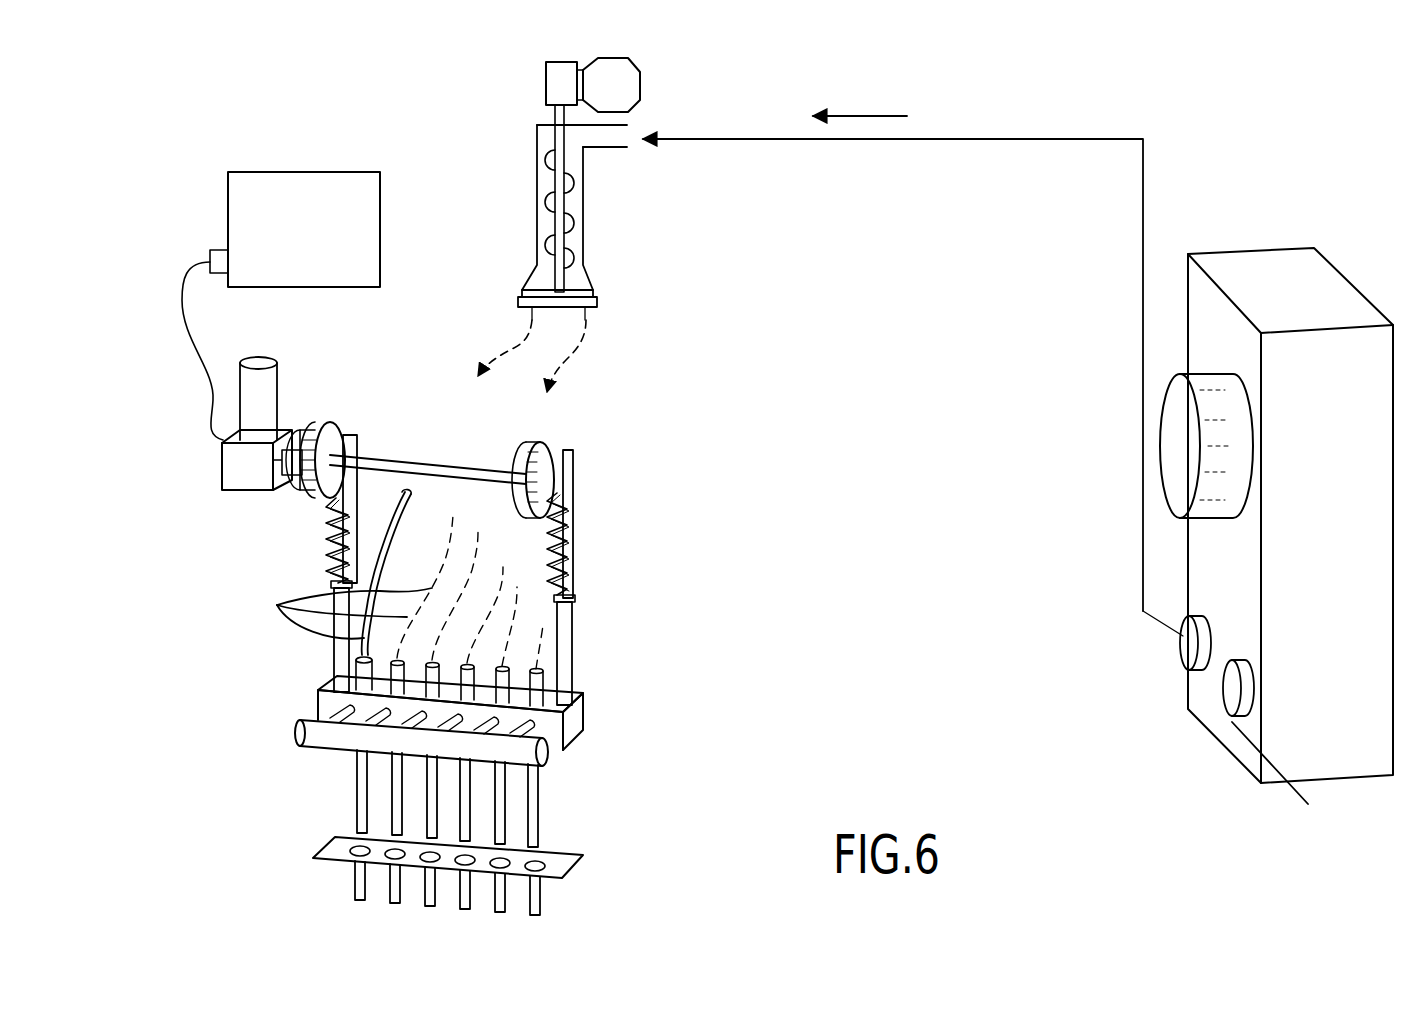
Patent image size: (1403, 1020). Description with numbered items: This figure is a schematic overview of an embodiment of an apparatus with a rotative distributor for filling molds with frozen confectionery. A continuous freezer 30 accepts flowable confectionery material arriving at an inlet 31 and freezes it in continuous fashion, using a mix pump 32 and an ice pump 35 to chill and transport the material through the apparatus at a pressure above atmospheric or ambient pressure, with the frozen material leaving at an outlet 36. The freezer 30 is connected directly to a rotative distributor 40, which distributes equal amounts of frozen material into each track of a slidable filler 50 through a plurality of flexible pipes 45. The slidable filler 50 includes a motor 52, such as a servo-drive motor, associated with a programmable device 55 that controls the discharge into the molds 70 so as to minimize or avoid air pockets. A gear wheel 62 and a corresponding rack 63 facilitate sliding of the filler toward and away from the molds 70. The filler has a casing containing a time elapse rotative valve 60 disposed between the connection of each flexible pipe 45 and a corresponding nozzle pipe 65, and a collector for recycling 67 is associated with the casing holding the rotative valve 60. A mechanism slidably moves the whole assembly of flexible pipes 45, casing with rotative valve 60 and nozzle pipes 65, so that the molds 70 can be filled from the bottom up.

The continuous freezer 30 is at (1307, 302).
The inlet 31 is at (1279, 808).
The mix pump 32 is at (1232, 686).
The ice pump 35 is at (1189, 643).
The outlet 36 is at (1173, 450).
The rotative distributor 40 is at (499, 117).
The flexible pipes 45 is at (341, 572).
The slidable filler 50 is at (418, 458).
The motor 52 is at (197, 458).
The programmable device 55 is at (318, 246).
The time elapse rotative valve 60 is at (575, 718).
The gear wheel 62 is at (548, 482).
The rack 63 is at (567, 555).
The nozzle pipes 65 is at (540, 792).
The collector for recycling 67 is at (290, 730).
The molds 70 is at (540, 890).